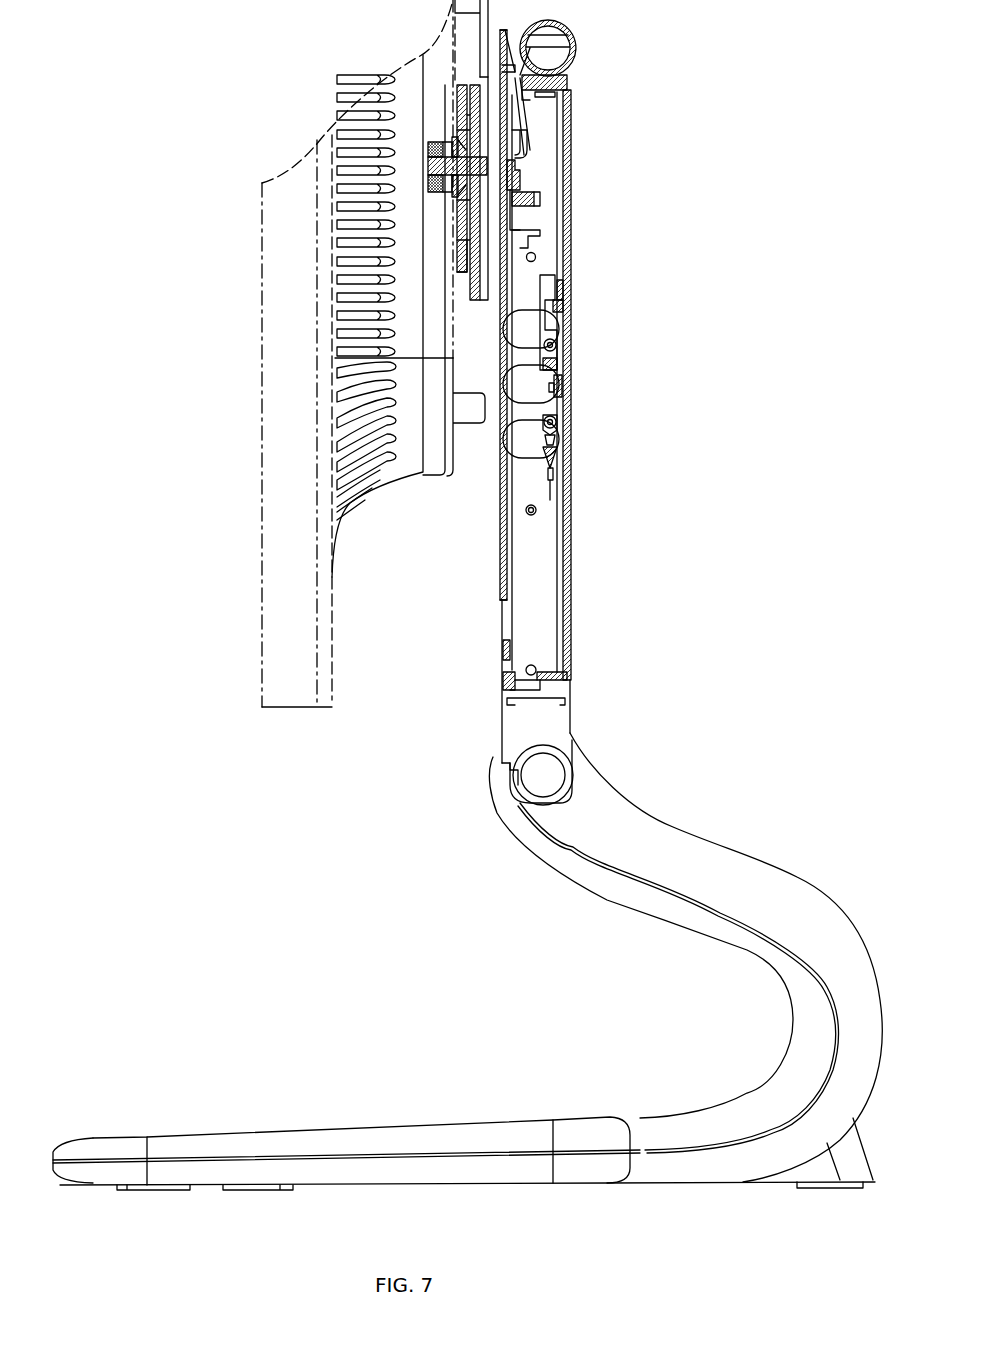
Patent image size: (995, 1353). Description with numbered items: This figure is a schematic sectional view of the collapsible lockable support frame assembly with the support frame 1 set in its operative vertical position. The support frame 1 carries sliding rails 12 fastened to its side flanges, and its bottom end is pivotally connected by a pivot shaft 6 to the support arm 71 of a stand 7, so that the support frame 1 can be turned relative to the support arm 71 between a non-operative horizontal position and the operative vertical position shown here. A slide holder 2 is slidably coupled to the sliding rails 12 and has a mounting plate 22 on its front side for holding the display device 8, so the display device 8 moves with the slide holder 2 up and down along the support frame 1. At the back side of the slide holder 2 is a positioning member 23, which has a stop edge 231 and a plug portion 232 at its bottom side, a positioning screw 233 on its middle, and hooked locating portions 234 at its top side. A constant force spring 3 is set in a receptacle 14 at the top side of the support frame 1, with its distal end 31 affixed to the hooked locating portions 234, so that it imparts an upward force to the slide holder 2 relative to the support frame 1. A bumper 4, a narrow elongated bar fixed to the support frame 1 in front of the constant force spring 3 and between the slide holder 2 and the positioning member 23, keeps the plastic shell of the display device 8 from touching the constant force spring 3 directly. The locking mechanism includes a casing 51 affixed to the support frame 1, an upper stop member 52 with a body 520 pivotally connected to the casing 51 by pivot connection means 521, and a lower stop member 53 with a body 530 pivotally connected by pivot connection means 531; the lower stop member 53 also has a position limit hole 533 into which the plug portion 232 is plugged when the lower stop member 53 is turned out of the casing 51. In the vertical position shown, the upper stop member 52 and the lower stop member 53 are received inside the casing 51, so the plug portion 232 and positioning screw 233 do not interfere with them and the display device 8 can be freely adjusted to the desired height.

The support frame 1 is at (568, 537).
The sliding rails 12 is at (538, 492).
The receptacle 14 is at (567, 85).
The slide holder 2 is at (476, 117).
The mounting plate 22 is at (457, 123).
The positioning member 23 is at (519, 183).
The stop edge 231 is at (528, 243).
The plug portion 232 is at (534, 258).
The positioning screw 233 is at (536, 200).
The hooked locating portions 234 is at (527, 145).
The constant force spring 3 is at (576, 38).
The distal end 31 is at (530, 153).
The bumper 4 is at (502, 510).
The casing 51 is at (559, 302).
The upper stop member 52 is at (560, 360).
The body 520 is at (561, 372).
The pivot connection means 521 is at (553, 346).
The lower stop member 53 is at (558, 452).
The body 530 is at (560, 460).
The pivot connection means 531 is at (557, 418).
The position limit hole 533 is at (556, 441).
The pivot shaft 6 is at (537, 778).
The stand 7 is at (410, 1137).
The support arm 71 is at (723, 922).
The display device 8 is at (290, 407).